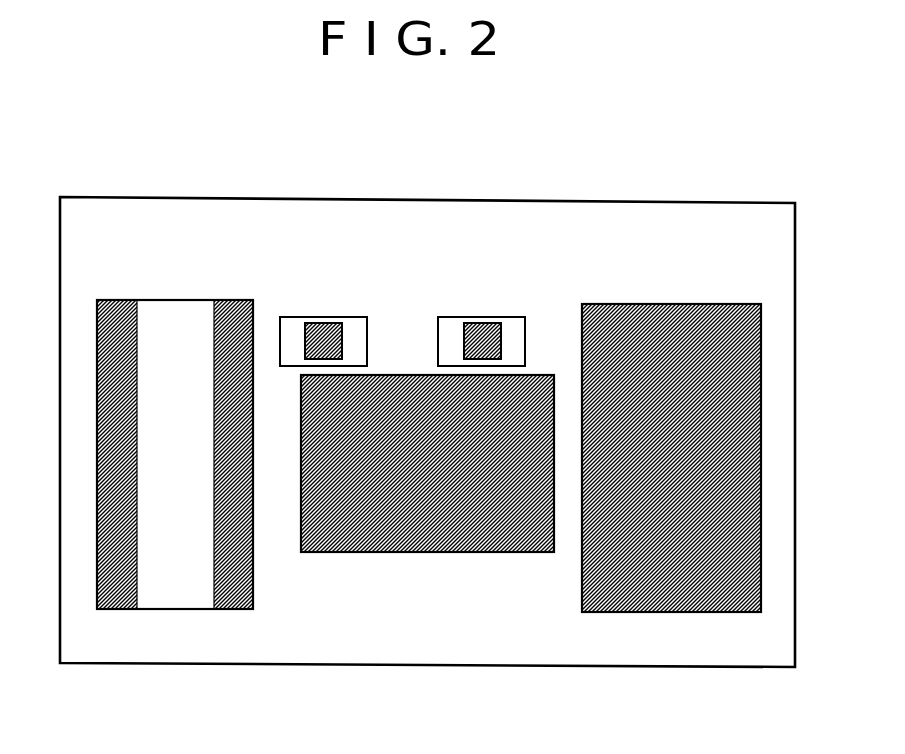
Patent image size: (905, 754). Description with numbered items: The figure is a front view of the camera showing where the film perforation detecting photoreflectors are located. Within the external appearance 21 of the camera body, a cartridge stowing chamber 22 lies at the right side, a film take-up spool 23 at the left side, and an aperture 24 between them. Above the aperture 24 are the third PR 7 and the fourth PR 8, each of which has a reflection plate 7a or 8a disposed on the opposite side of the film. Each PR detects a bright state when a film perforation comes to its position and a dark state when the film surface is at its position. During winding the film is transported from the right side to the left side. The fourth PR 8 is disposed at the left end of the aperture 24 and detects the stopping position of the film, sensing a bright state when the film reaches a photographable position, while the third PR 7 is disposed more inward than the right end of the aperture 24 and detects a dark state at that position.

The external appearance of the camera body 21 is at (687, 203).
The cartridge stowing chamber 22 is at (762, 433).
The film take-up spool 23 is at (157, 483).
The aperture 24 is at (450, 553).
The third PR 7 is at (477, 323).
The reflection plate 7a is at (510, 317).
The fourth PR 8 is at (318, 323).
The reflection plate 8a is at (352, 317).